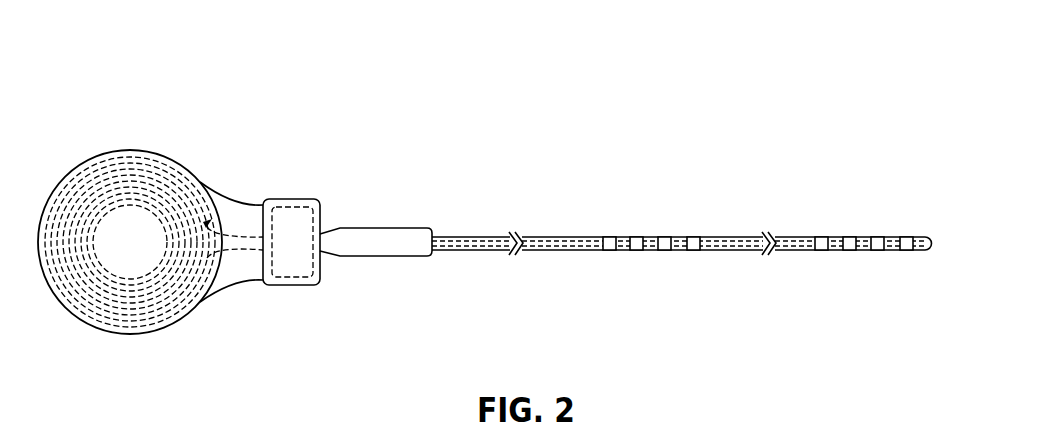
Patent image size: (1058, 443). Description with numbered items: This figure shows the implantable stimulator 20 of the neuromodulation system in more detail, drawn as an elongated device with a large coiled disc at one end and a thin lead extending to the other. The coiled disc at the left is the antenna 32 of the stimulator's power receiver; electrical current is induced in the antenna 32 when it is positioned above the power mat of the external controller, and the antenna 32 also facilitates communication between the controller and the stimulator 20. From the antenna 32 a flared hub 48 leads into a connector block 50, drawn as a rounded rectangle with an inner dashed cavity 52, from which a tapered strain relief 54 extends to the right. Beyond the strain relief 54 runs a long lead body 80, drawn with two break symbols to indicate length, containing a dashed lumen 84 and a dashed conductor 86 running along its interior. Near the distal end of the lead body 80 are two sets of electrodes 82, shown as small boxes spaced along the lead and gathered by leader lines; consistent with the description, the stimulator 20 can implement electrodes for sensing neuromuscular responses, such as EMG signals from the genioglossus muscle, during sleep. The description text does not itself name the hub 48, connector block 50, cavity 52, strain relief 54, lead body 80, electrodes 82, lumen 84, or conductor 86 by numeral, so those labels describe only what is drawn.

The implantable stimulator 20 is at (472, 104).
The antenna 32 is at (163, 310).
The hub 48 is at (188, 176).
The connector block 50 is at (293, 200).
The connector cavity 52 is at (318, 207).
The strain relief 54 is at (395, 237).
The lead body 80 is at (555, 251).
The electrodes 82 is at (695, 238).
The lumen 84 is at (563, 238).
The conductor 86 is at (485, 244).